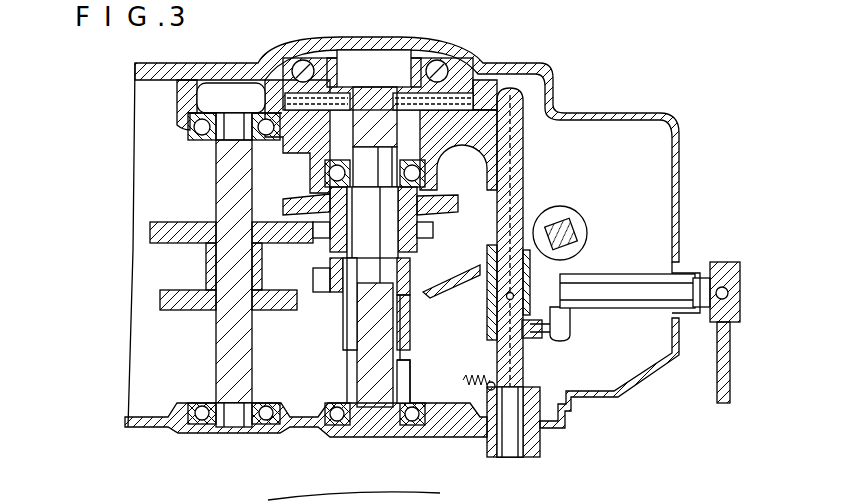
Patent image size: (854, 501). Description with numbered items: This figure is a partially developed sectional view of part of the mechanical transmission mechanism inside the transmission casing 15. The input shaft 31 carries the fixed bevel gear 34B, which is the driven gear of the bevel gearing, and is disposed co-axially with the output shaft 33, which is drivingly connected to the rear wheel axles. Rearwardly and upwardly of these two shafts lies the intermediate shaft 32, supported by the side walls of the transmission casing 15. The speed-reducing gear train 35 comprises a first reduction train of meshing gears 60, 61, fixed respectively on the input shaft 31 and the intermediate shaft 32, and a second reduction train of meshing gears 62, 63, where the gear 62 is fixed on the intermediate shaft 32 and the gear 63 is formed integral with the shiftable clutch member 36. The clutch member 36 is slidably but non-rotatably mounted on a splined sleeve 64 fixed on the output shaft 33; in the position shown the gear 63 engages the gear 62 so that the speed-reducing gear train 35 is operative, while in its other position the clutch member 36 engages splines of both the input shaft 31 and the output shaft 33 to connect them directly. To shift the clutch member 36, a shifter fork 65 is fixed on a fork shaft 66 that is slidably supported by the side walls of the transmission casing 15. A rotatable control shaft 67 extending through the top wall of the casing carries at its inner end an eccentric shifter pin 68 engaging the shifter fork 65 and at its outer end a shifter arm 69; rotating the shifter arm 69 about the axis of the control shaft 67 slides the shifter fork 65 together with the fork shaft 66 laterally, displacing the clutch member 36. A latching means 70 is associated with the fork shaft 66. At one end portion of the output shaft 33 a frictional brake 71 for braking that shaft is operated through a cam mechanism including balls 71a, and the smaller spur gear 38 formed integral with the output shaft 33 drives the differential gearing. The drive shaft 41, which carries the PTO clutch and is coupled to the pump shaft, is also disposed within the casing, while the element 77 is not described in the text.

The transmission casing 15 is at (443, 420).
The frictional brake 71 is at (470, 87).
The balls 71a is at (292, 74).
The intermediate shaft 32 is at (230, 172).
The gear 61 is at (150, 228).
The gear 62 is at (160, 300).
The shiftable clutch member 36 is at (320, 265).
The speed-reducing gear train 35 is at (298, 305).
The input shaft 31 is at (438, 200).
The output shaft 33 is at (363, 247).
The splined sleeve 64 is at (345, 350).
The bevel gear 34B is at (440, 207).
The shifter fork 65 is at (435, 285).
The gear 63 is at (425, 270).
The smaller spur gear 38 is at (400, 377).
The fork shaft 66 is at (525, 165).
The gear 60 is at (490, 205).
The latching means 70 is at (485, 455).
The eccentric shifter pin 68 is at (552, 340).
The control shaft 67 is at (628, 310).
The shifter arm 69 is at (717, 372).
The drive shaft 41 is at (590, 257).
The retainer 77 is at (585, 215).